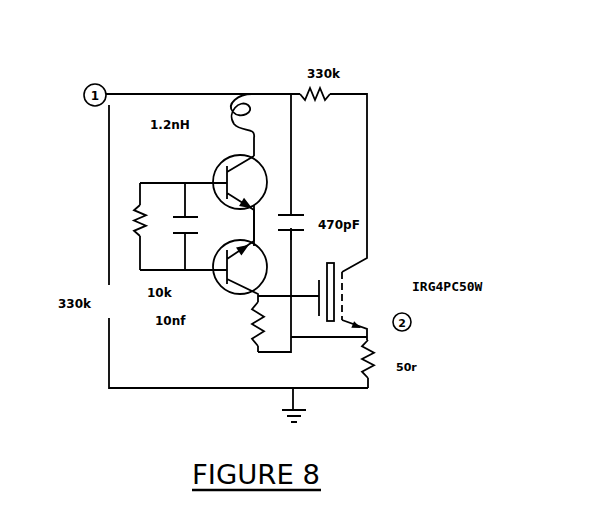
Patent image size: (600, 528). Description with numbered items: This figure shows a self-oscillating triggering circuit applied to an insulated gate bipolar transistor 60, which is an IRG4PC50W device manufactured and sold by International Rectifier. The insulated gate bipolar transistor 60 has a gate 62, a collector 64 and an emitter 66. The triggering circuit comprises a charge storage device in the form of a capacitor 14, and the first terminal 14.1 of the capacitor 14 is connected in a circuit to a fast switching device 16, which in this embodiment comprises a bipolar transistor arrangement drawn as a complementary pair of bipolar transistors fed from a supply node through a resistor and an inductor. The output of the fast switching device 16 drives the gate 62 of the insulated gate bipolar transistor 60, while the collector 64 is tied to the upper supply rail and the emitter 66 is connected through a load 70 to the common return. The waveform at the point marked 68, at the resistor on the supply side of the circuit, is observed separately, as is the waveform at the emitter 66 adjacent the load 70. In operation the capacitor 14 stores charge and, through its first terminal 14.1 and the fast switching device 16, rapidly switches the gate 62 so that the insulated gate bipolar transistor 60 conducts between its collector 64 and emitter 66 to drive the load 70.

The waveform point 68 is at (289, 92).
The fast switching device 16 is at (270, 208).
The first terminal 14.1 is at (296, 211).
The capacitor 14 is at (314, 234).
The collector 64 is at (340, 270).
The insulated gate bipolar transistor 60 is at (353, 294).
The load 70 is at (369, 341).
The gate 62 is at (316, 298).
The emitter 66 is at (348, 302).